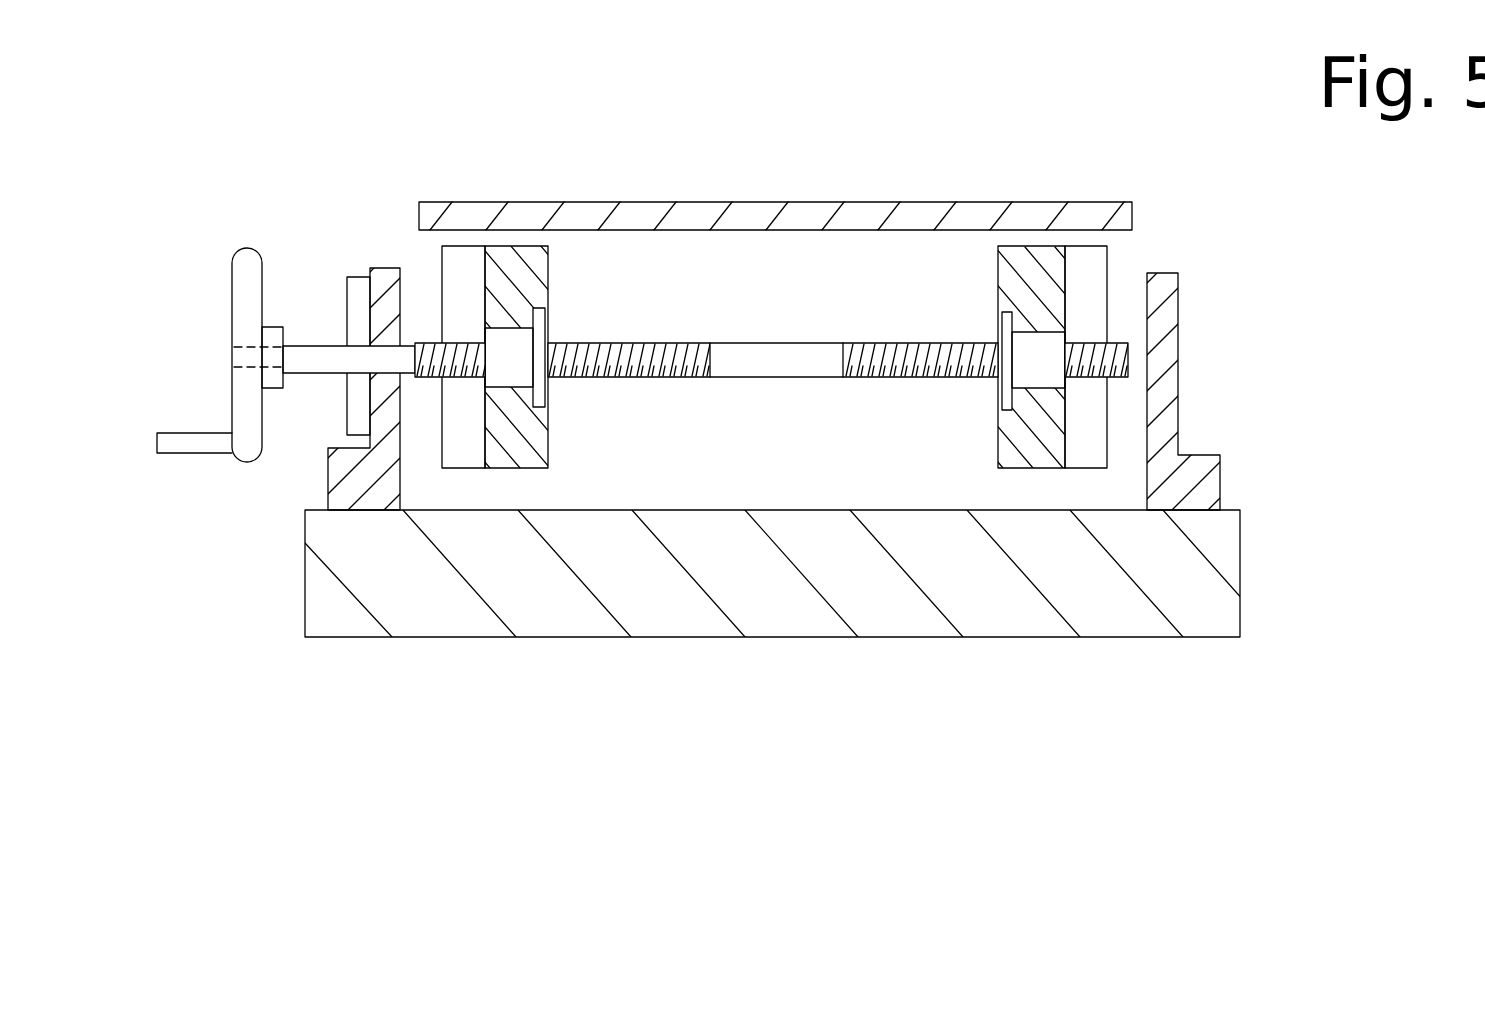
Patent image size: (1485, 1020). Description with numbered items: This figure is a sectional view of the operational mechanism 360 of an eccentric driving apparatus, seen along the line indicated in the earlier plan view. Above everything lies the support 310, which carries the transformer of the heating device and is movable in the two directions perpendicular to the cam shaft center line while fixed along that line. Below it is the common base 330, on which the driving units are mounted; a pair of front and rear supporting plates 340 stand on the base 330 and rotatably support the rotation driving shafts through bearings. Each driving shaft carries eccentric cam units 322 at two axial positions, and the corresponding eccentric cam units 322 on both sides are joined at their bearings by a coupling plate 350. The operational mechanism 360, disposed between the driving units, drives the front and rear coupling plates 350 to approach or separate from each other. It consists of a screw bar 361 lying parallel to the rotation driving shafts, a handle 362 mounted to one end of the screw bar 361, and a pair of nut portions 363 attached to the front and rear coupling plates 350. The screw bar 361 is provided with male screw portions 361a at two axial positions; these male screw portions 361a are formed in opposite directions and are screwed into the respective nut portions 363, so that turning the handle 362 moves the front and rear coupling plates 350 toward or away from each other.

The support 310 is at (807, 202).
The eccentric cam unit 322 is at (463, 445).
The base 330 is at (783, 613).
The supporting plate 340 is at (385, 268).
The coupling plate 350 is at (520, 248).
The operational mechanism 360 is at (652, 422).
The screw bar 361 is at (780, 378).
The male screw portion 361a is at (618, 340).
The handle 362 is at (250, 247).
The nut portion 363 is at (515, 347).